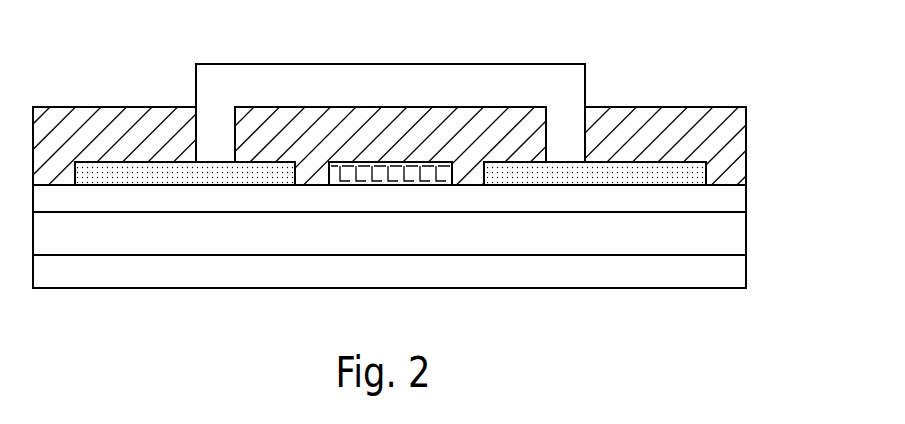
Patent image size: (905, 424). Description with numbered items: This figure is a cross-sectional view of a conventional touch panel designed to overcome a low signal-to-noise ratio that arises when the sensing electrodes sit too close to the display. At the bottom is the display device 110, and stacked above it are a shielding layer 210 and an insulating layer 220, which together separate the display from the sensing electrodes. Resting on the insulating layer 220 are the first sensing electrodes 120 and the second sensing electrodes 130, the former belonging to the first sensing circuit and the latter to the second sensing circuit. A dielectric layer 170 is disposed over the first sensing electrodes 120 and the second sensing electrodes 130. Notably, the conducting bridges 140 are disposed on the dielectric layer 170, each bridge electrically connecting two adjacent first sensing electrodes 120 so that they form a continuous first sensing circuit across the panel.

The display device 110 is at (737, 272).
The shielding layer 210 is at (737, 238).
The insulating layer 220 is at (737, 204).
The first sensing electrodes 120 is at (110, 173).
The second sensing electrodes 130 is at (385, 173).
The conducting bridges 140 is at (318, 75).
The dielectric layer 170 is at (737, 143).